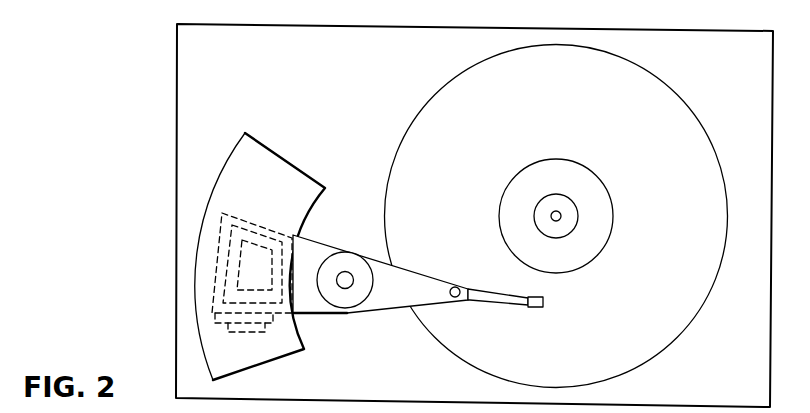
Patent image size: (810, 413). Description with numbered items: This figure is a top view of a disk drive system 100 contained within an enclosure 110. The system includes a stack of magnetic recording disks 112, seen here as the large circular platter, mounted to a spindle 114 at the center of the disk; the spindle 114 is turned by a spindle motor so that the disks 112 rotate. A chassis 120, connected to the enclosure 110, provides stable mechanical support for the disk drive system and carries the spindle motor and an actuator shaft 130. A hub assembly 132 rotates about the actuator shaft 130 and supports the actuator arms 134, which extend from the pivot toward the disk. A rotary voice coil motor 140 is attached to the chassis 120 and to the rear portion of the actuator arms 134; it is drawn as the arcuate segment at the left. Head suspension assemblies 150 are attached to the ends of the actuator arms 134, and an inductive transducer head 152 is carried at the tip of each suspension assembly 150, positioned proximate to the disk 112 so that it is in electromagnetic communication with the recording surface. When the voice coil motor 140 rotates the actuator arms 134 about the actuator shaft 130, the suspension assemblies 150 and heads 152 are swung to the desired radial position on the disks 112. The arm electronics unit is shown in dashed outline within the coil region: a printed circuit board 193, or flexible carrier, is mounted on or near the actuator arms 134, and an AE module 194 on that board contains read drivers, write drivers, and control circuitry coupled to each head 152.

The disk drive system 100 is at (152, 84).
The enclosure 110 is at (177, 185).
The magnetic recording disk 112 is at (576, 107).
The spindle 114 is at (610, 220).
The chassis 120 is at (743, 381).
The actuator shaft 130 is at (345, 288).
The hub assembly 132 is at (357, 257).
The actuator arm 134 is at (428, 278).
The rotary voice coil motor 140 is at (277, 160).
The head suspension assembly 150 is at (500, 300).
The inductive transducer head 152 is at (543, 305).
The printed circuit board 193 is at (213, 325).
The AE module 194 is at (265, 328).